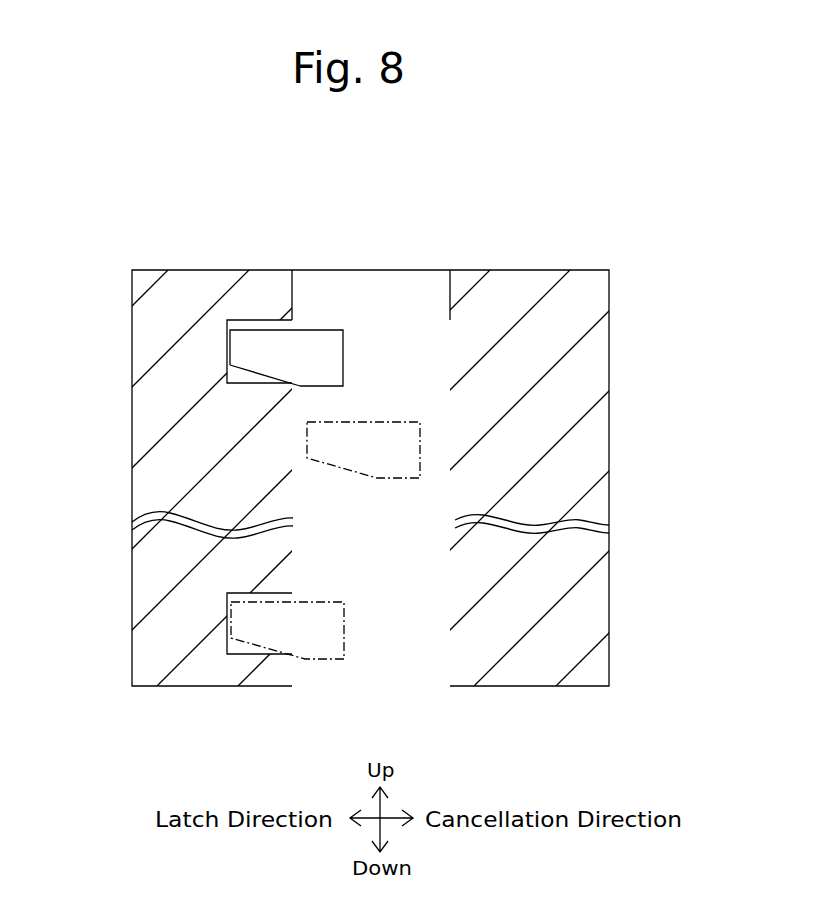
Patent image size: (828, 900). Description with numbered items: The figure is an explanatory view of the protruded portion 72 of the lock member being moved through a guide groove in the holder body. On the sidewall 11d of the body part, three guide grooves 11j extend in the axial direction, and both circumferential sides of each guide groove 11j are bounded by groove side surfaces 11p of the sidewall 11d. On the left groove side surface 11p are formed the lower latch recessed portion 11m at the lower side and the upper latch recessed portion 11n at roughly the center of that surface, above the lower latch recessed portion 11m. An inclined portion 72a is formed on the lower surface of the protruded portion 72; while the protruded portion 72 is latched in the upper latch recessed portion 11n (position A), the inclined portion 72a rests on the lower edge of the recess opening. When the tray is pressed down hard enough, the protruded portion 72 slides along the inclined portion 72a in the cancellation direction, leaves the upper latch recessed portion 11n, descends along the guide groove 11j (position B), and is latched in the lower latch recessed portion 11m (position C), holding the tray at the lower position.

The sidewall 11d is at (159, 467).
The guide groove 11j is at (373, 295).
The groove side surface 11p is at (292, 289).
The upper latch recessed portion 11n is at (268, 325).
The lower latch recessed portion 11m is at (252, 595).
The protruded portion 72 is at (330, 361).
The inclined portion 72a is at (238, 384).